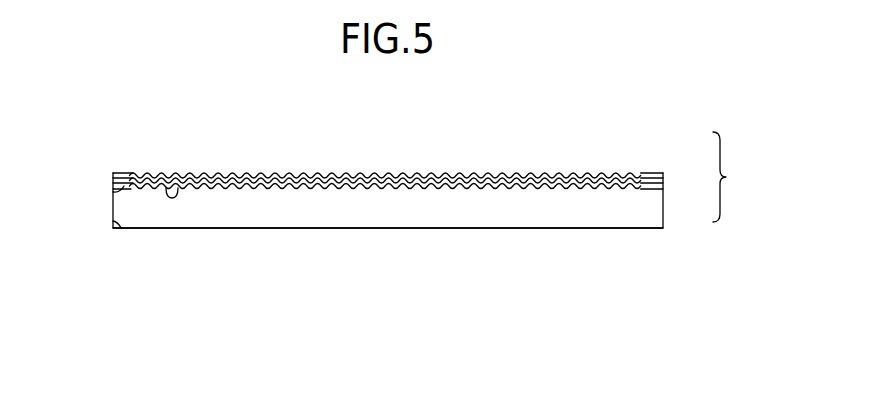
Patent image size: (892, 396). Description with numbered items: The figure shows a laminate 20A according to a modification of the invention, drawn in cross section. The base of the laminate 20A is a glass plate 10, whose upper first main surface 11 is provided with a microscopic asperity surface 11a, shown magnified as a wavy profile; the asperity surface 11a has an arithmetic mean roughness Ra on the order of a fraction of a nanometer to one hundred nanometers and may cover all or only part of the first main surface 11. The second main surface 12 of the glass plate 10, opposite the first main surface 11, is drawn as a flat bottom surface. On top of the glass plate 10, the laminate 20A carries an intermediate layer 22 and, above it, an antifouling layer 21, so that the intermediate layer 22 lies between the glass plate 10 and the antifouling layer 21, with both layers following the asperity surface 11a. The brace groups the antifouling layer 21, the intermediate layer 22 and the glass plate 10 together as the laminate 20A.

The glass plate 10 is at (650, 205).
The first main surface 11 is at (113, 192).
The microscopic asperity surface 11a is at (175, 186).
The second main surface 12 is at (113, 223).
The antifouling layer 21 is at (645, 172).
The intermediate layer 22 is at (663, 178).
The laminate 20A is at (772, 191).